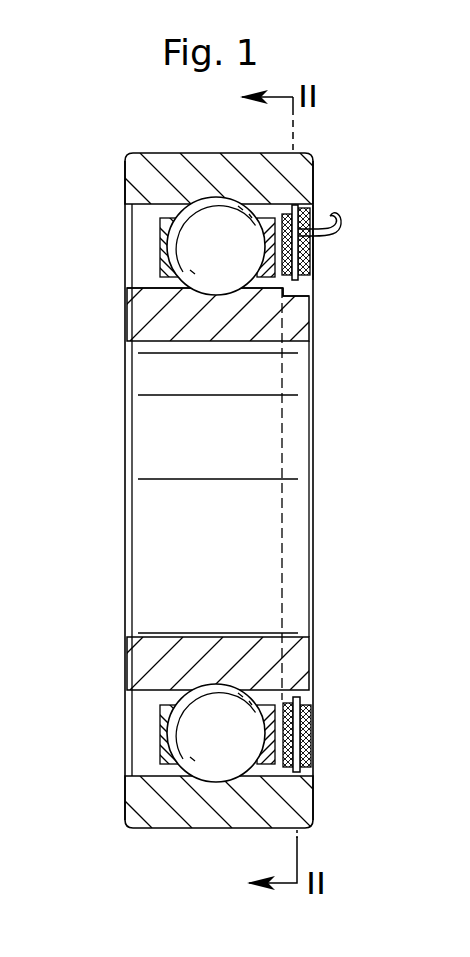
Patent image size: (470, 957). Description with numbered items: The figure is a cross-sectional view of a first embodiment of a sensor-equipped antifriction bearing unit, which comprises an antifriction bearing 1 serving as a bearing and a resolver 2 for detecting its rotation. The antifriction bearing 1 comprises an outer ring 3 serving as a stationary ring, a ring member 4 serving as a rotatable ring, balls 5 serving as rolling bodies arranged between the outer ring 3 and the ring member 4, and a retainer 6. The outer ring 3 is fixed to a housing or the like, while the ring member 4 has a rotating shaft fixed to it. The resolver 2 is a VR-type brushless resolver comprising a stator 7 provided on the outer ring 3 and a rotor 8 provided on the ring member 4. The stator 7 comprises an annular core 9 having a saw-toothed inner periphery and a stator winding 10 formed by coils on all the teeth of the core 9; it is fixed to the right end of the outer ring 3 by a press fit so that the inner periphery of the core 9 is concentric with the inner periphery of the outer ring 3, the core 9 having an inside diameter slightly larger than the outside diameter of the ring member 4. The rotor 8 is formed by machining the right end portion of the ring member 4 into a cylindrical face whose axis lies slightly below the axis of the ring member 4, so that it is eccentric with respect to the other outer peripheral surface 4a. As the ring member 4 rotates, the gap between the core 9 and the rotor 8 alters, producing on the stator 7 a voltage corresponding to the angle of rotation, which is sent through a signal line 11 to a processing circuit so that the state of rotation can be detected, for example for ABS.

The antifriction bearing 1 is at (318, 151).
The resolver 2 is at (318, 272).
The outer ring 3 is at (133, 183).
The ring member 4 is at (137, 320).
The outer peripheral surface 4a is at (155, 284).
The balls 5 is at (190, 240).
The retainer 6 is at (160, 255).
The stator 7 is at (300, 210).
The rotor 8 is at (303, 290).
The annular core 9 is at (310, 258).
The stator winding 10 is at (283, 210).
The signal line 11 is at (342, 236).